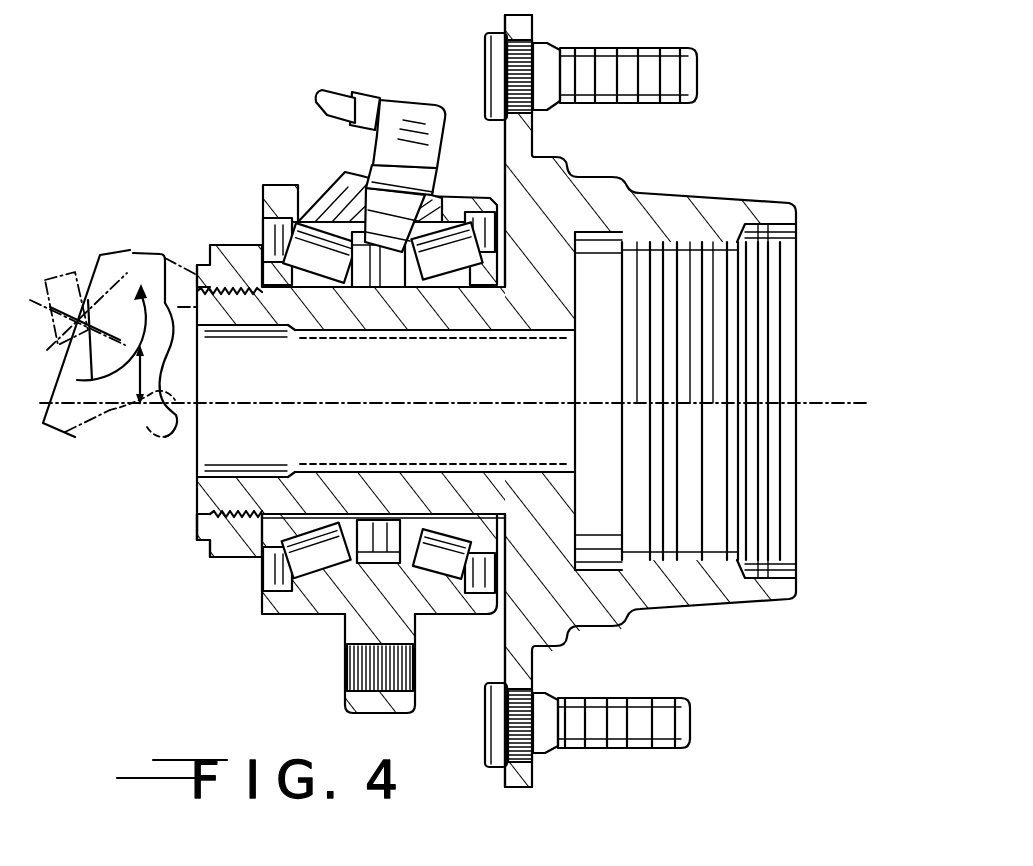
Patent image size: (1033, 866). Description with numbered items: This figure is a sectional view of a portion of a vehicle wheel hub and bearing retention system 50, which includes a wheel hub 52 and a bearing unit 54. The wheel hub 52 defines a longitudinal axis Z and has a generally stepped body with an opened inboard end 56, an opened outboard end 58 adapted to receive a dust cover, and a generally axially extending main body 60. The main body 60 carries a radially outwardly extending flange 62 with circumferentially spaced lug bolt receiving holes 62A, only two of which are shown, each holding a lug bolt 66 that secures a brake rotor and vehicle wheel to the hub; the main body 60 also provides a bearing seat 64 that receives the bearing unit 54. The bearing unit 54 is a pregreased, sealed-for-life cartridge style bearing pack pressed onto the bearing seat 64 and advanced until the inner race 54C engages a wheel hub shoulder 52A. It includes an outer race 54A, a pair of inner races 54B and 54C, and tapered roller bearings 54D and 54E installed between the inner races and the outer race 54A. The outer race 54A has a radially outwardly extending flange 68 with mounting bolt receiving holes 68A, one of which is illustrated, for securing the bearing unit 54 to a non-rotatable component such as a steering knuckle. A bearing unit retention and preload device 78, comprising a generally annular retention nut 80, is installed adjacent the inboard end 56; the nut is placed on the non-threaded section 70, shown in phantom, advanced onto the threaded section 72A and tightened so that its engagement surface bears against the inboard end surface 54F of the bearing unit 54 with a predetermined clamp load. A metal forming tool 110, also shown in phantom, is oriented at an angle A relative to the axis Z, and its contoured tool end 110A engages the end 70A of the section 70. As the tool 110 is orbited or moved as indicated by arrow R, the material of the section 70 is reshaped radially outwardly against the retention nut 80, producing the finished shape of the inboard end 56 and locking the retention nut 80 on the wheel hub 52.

The vehicle wheel hub and bearing retention system 50 is at (768, 126).
The wheel hub 52 is at (728, 196).
The wheel hub shoulder 52A is at (490, 282).
The bearing unit 54 is at (248, 625).
The outer race 54A is at (283, 185).
The inner race 54B is at (315, 280).
The inner race 54C is at (437, 282).
The bearings 54D is at (312, 545).
The bearings 54E is at (450, 600).
The inboard end surface 54F is at (228, 245).
The opened inboard end 56 is at (197, 506).
The opened outboard end 58 is at (795, 598).
The main body 60 is at (537, 487).
The flange 62 is at (537, 790).
The lug bolt receiving holes 62A is at (520, 58).
The bearing seat 64 is at (417, 525).
The lug bolt 66 is at (662, 58).
The flange 68 is at (350, 712).
The mounting bolt receiving holes 68A is at (360, 688).
The non-threaded section 70 is at (190, 482).
The end of section 70A is at (205, 462).
The threaded section 72A is at (215, 258).
The bearing unit retention and preload device 78 is at (180, 532).
The retention nut 80 is at (205, 548).
The metal forming tool 110 is at (105, 255).
The tool end 110A is at (132, 432).
The arrow R is at (85, 282).
The angle A is at (160, 401).
The longitudinal axis Z is at (840, 403).